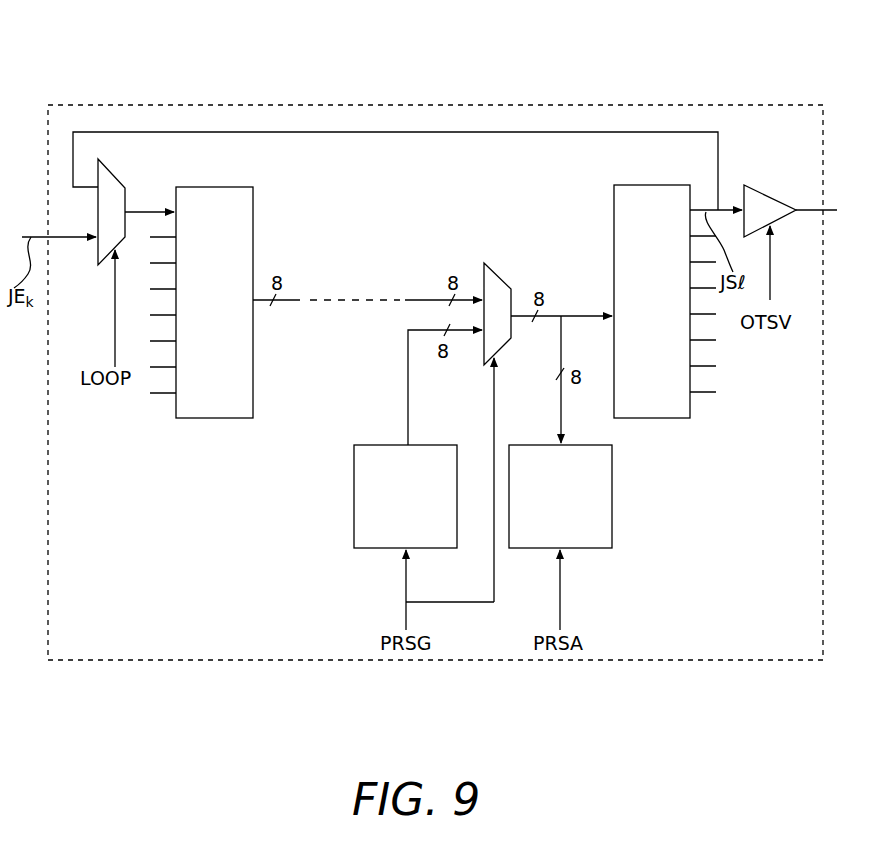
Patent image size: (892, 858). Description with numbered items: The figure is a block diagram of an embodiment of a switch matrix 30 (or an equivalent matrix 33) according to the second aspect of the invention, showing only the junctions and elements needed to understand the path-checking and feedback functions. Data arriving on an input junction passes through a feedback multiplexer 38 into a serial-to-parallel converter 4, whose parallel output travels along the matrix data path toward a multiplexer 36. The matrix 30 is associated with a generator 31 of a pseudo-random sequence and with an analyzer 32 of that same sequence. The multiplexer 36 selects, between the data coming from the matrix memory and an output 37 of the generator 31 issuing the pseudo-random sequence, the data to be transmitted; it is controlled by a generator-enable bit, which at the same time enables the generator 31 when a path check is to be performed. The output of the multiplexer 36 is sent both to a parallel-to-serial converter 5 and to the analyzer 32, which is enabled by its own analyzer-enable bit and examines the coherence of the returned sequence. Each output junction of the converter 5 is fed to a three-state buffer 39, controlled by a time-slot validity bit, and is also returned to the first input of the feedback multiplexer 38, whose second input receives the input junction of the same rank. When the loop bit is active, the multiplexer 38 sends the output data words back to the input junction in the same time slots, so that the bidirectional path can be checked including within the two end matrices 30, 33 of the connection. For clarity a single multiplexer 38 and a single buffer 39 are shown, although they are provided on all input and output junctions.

The switch matrix 30 is at (408, 105).
The switch matrix 33 is at (435, 382).
The feedback multiplexer 38 is at (125, 178).
The converter 4 is at (210, 418).
The output of generator 37 is at (408, 397).
The multiplexer 36 is at (505, 276).
The generator 31 is at (354, 505).
The analyzer 32 is at (612, 506).
The converter 5 is at (668, 418).
The three-state buffer 39 is at (773, 196).